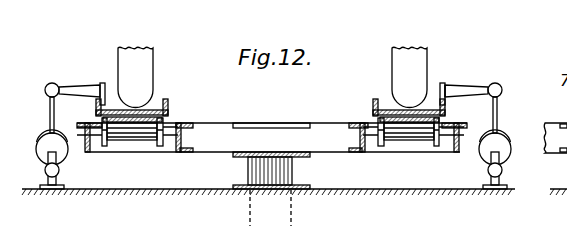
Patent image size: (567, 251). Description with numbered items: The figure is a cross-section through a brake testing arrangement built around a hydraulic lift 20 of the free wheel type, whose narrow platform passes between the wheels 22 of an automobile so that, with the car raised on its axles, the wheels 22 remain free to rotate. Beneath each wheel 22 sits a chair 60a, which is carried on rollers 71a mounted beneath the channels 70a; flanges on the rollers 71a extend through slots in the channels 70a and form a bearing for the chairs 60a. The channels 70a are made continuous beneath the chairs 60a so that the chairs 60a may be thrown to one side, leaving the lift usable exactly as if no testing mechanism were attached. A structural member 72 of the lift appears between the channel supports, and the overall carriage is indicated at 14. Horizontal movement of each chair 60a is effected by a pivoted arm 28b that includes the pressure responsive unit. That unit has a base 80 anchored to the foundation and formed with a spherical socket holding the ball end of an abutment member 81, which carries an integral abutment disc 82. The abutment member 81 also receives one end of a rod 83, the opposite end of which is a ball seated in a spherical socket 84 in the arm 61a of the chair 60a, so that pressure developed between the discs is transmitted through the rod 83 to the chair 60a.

The carriage 14 is at (524, 73).
The hydraulic lift 20 is at (284, 174).
The wheel 22 is at (136, 47).
The pivoted arm 28b is at (68, 160).
The chair 60a is at (166, 98).
The arm 61a is at (456, 88).
The channel 70a is at (170, 104).
The roller 71a is at (143, 150).
The beam 72 is at (182, 133).
The base 80 is at (53, 190).
The abutment member 81 is at (323, 8).
The abutment disc 82 is at (363, 9).
The rod 83 is at (48, 107).
The spherical socket 84 is at (58, 87).